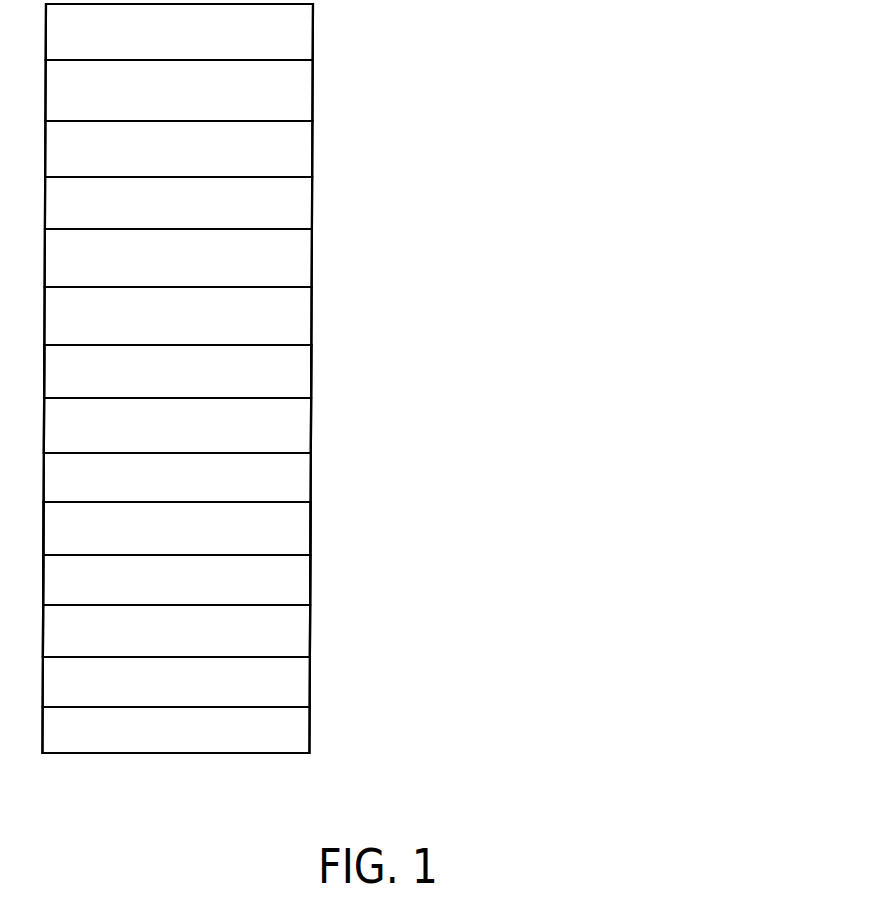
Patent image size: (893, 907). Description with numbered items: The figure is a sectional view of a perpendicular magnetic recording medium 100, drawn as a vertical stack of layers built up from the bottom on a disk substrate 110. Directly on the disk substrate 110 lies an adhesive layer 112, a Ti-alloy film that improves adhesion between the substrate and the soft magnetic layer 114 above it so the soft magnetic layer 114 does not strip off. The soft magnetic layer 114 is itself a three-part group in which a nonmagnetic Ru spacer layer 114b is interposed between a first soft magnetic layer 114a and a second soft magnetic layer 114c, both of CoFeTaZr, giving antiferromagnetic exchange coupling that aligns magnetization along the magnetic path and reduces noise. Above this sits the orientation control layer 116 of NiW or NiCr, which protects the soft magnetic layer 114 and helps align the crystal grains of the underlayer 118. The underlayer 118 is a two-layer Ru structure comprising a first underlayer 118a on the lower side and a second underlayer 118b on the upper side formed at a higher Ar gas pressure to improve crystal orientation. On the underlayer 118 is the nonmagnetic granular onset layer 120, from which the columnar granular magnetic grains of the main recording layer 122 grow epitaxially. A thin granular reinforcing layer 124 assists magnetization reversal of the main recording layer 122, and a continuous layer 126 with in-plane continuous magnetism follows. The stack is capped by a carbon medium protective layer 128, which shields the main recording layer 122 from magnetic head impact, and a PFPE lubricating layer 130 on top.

The perpendicular magnetic recording medium 100 is at (165, 787).
The disk substrate 110 is at (295, 732).
The adhesive layer 112 is at (295, 680).
The soft magnetic layer 114 is at (456, 495).
The first soft magnetic layer 114a is at (295, 626).
The spacer layer 114b is at (296, 576).
The second soft magnetic layer 114c is at (296, 525).
The orientation control layer 116 is at (297, 470).
The underlayer 118 is at (457, 334).
The first underlayer 118a is at (298, 418).
The second underlayer 118b is at (298, 366).
The onset layer 120 is at (298, 313).
The main recording layer 122 is at (298, 262).
The reinforcing layer 124 is at (298, 210).
The continuous layer 126 is at (298, 158).
The medium protective layer 128 is at (298, 104).
The lubricating layer 130 is at (298, 49).